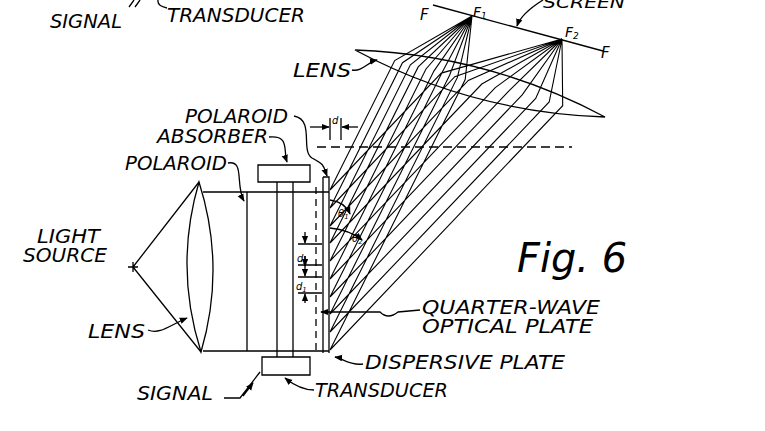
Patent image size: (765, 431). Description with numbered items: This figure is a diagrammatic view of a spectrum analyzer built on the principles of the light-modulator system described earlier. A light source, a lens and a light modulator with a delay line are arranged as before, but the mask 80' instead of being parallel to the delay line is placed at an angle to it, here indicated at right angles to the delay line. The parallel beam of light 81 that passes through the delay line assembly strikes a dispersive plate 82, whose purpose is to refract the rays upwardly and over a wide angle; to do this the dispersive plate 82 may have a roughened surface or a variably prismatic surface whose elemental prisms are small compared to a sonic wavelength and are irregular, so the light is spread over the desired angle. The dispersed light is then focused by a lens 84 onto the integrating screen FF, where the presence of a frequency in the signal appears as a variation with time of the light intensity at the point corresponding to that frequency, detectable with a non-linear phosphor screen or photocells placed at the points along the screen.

The lens 84 is at (599, 89).
The mask 80' is at (460, 162).
The parallel beam of light 81 is at (230, 353).
The dispersive plate 82 is at (331, 353).